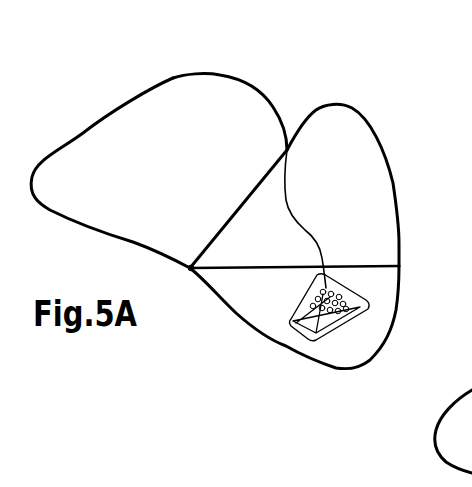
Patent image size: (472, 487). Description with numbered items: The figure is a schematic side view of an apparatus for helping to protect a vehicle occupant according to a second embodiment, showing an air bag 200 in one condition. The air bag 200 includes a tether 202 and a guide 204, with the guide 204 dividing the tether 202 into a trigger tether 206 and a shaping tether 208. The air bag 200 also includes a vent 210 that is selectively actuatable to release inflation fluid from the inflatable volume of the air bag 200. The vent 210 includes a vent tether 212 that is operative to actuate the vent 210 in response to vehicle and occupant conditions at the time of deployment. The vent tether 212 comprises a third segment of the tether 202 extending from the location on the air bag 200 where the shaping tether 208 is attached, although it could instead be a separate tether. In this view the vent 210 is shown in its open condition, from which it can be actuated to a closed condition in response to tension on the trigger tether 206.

The air bag 200 is at (173, 77).
The tether 202 is at (236, 208).
The guide 204 is at (188, 264).
The trigger tether 206 is at (262, 264).
The shaping tether 208 is at (264, 168).
The vent 210 is at (269, 325).
The vent tether 212 is at (316, 239).